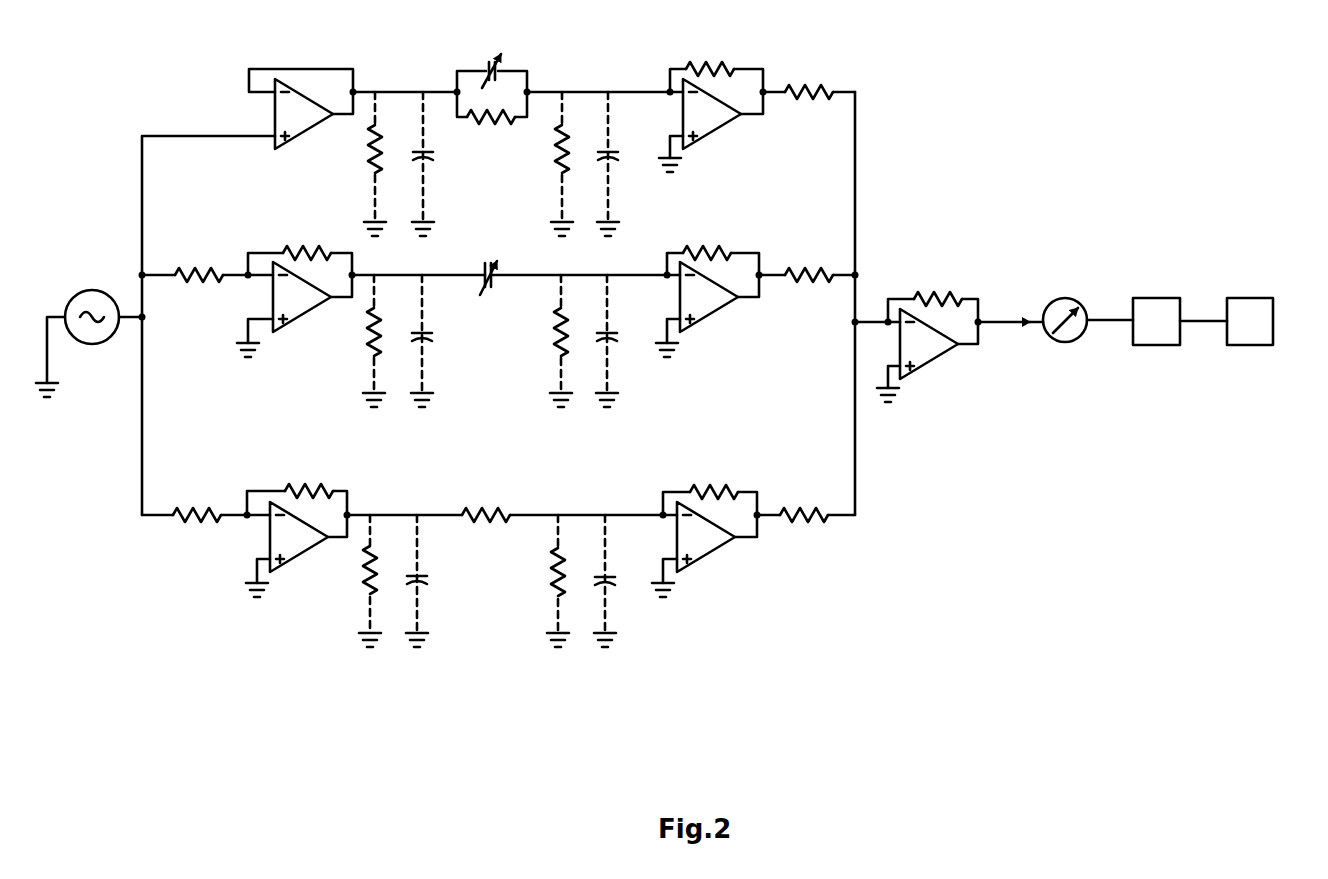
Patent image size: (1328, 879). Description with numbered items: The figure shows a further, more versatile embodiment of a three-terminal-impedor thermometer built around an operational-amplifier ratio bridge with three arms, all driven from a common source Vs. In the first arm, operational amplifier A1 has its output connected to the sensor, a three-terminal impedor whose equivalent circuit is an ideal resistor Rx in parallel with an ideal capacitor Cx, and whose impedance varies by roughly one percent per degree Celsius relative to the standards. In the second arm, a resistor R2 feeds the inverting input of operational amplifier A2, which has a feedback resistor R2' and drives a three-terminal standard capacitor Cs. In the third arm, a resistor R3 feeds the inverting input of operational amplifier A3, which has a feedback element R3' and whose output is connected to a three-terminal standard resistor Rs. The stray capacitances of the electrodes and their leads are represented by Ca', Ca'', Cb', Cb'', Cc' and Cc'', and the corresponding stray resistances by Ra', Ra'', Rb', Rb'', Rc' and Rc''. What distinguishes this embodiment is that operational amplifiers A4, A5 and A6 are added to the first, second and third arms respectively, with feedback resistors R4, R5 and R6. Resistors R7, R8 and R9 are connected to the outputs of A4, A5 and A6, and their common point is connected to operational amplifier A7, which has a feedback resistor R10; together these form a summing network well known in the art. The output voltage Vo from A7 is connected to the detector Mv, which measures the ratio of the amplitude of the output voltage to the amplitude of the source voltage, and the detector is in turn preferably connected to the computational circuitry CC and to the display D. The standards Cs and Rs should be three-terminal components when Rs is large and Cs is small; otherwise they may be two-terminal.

The source Vs is at (89, 334).
The operational amplifier A1 is at (301, 109).
The operational amplifier A2 is at (294, 305).
The operational amplifier A3 is at (296, 544).
The operational amplifier A4 is at (711, 120).
The operational amplifier A5 is at (707, 305).
The operational amplifier A6 is at (704, 544).
The operational amplifier A7 is at (927, 350).
The resistor R2 is at (195, 262).
The feedback resistor R2' is at (303, 240).
The resistor R3 is at (193, 501).
The feedback element R3' is at (302, 477).
The feedback resistor R4 is at (704, 57).
The feedback resistor R5 is at (706, 240).
The feedback resistor R6 is at (710, 480).
The resistor R7 is at (805, 75).
The resistor R8 is at (804, 260).
The resistor R9 is at (800, 502).
The feedback resistor R10 is at (935, 287).
The stray resistance Ra' is at (365, 164).
The stray resistance Ra'' is at (550, 164).
The stray capacitance Ca' is at (436, 164).
The stray capacitance Ca'' is at (625, 164).
The stray resistance Rb' is at (364, 341).
The stray resistance Rb'' is at (547, 341).
The stray capacitance Cb' is at (436, 341).
The stray capacitance Cb'' is at (623, 341).
The stray resistance Rc' is at (360, 581).
The stray resistance Rc'' is at (545, 581).
The stray capacitance Cc' is at (430, 581).
The stray capacitance Cc'' is at (620, 581).
The ideal capacitor Cx is at (492, 64).
The ideal resistor Rx is at (492, 125).
The 3-terminal standard capacitor Cs is at (480, 269).
The 3-terminal standard resistor Rs is at (482, 503).
The output voltage Vo is at (1010, 304).
The detector Mv is at (1078, 301).
The computational circuitry CC is at (1152, 297).
The display D is at (1250, 297).